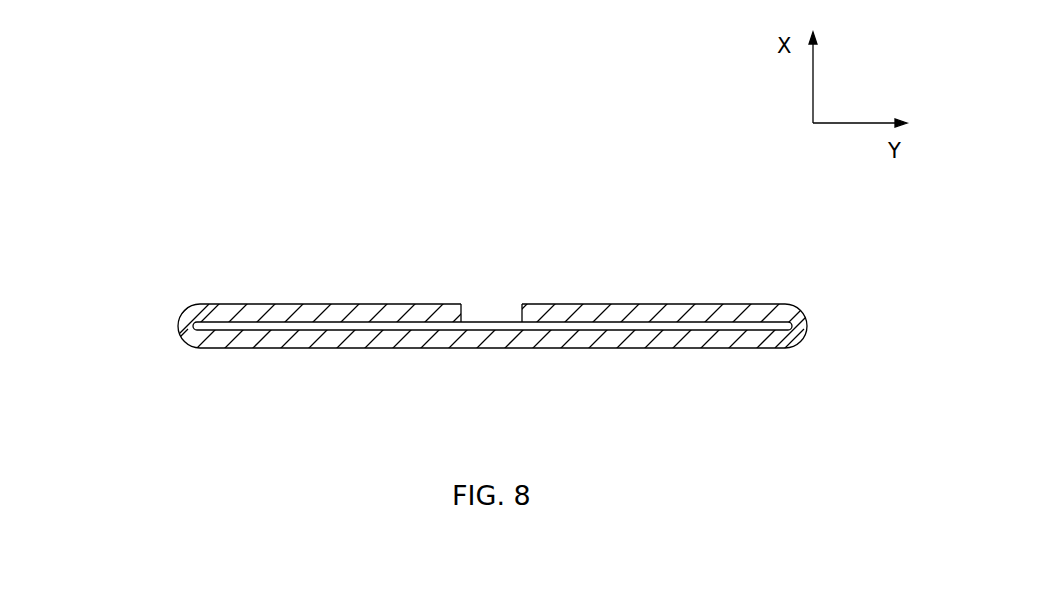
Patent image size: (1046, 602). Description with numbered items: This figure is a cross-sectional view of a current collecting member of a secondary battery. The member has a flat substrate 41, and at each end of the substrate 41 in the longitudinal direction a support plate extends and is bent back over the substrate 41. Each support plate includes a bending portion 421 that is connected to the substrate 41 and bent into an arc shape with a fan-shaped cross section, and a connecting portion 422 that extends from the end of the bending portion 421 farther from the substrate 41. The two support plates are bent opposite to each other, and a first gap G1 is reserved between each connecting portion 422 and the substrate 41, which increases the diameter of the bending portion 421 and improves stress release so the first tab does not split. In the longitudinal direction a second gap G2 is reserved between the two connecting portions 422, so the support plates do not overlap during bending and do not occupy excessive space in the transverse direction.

The substrate 41 is at (555, 340).
The connecting portion 422 is at (372, 310).
The bending portion 421 is at (178, 330).
The first gap G1 is at (258, 328).
The second gap G2 is at (488, 315).